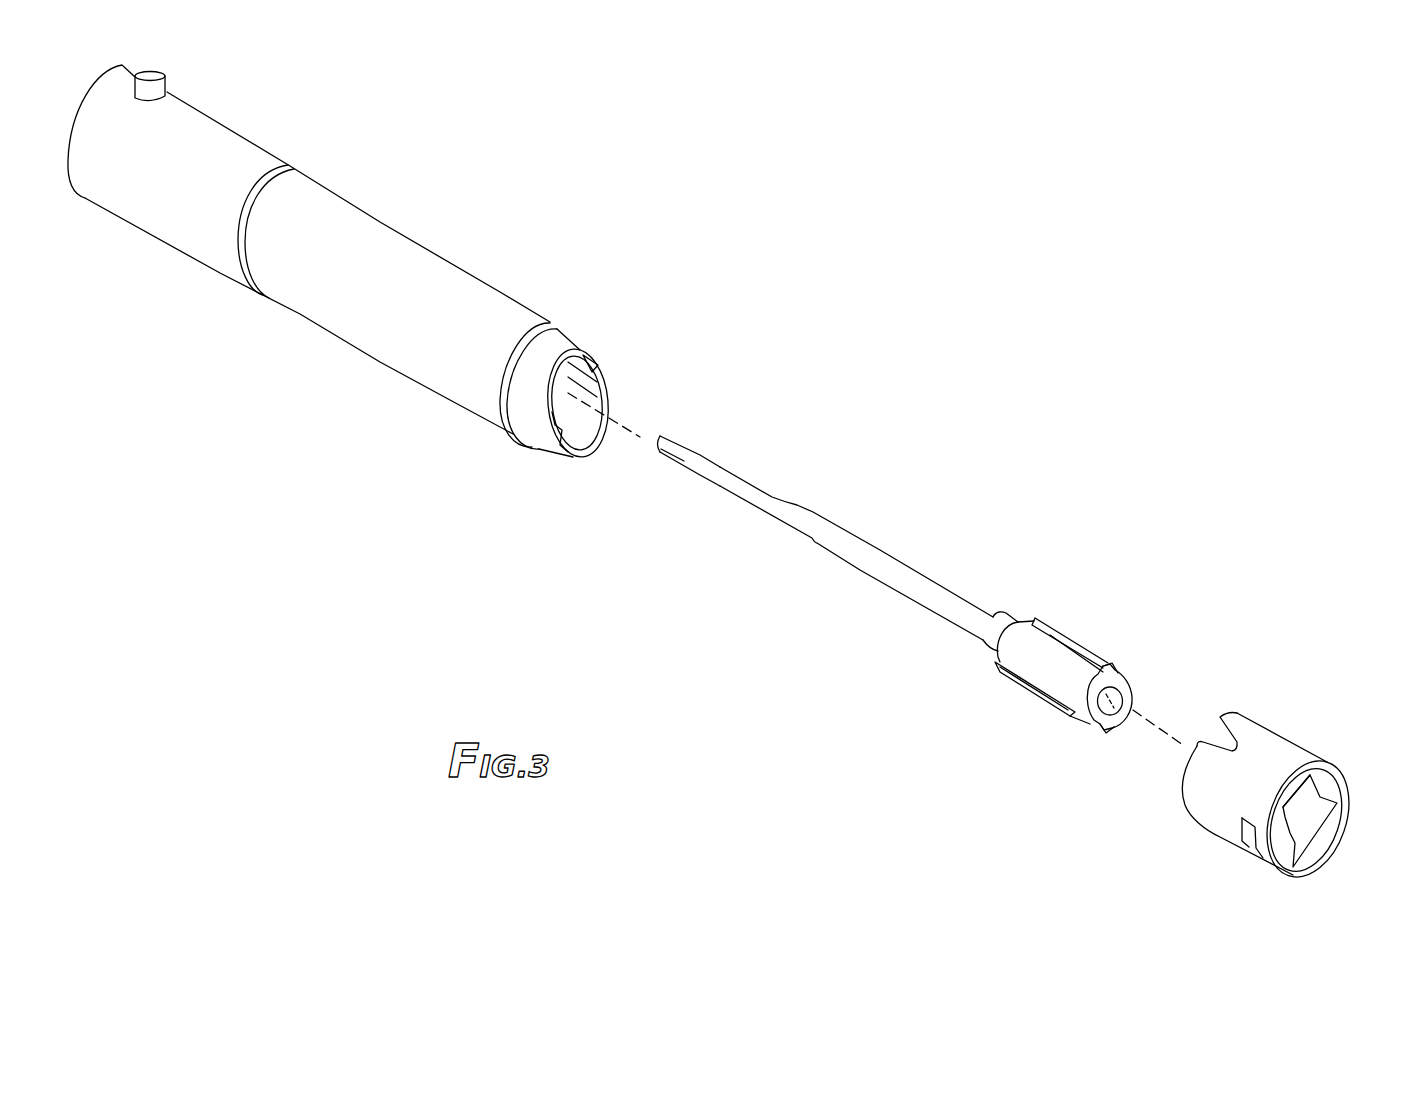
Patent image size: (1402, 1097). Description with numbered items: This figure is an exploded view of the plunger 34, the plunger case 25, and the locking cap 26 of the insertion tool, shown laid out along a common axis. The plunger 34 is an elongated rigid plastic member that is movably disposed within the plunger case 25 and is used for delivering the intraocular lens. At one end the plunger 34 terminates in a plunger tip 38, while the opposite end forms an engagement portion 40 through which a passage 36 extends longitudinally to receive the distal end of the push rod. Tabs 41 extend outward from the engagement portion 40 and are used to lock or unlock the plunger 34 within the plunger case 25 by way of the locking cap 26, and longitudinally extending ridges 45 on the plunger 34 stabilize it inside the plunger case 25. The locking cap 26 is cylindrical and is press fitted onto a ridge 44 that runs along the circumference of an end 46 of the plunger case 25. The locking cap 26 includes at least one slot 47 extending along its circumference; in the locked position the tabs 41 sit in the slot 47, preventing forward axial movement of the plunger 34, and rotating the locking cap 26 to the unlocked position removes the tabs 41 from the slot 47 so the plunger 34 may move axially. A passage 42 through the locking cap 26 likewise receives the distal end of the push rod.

The plunger case 25 is at (402, 157).
The locking cap 26 is at (1232, 877).
The plunger 34 is at (890, 637).
The passage 36 is at (1120, 700).
The plunger tip 38 is at (687, 423).
The engagement portion 40 is at (1090, 608).
The tabs 41 is at (1048, 625).
The passage 42 is at (1320, 833).
The ridge 44 is at (567, 338).
The ridges 45 is at (1110, 657).
The end 46 is at (523, 453).
The slot 47 is at (1247, 842).